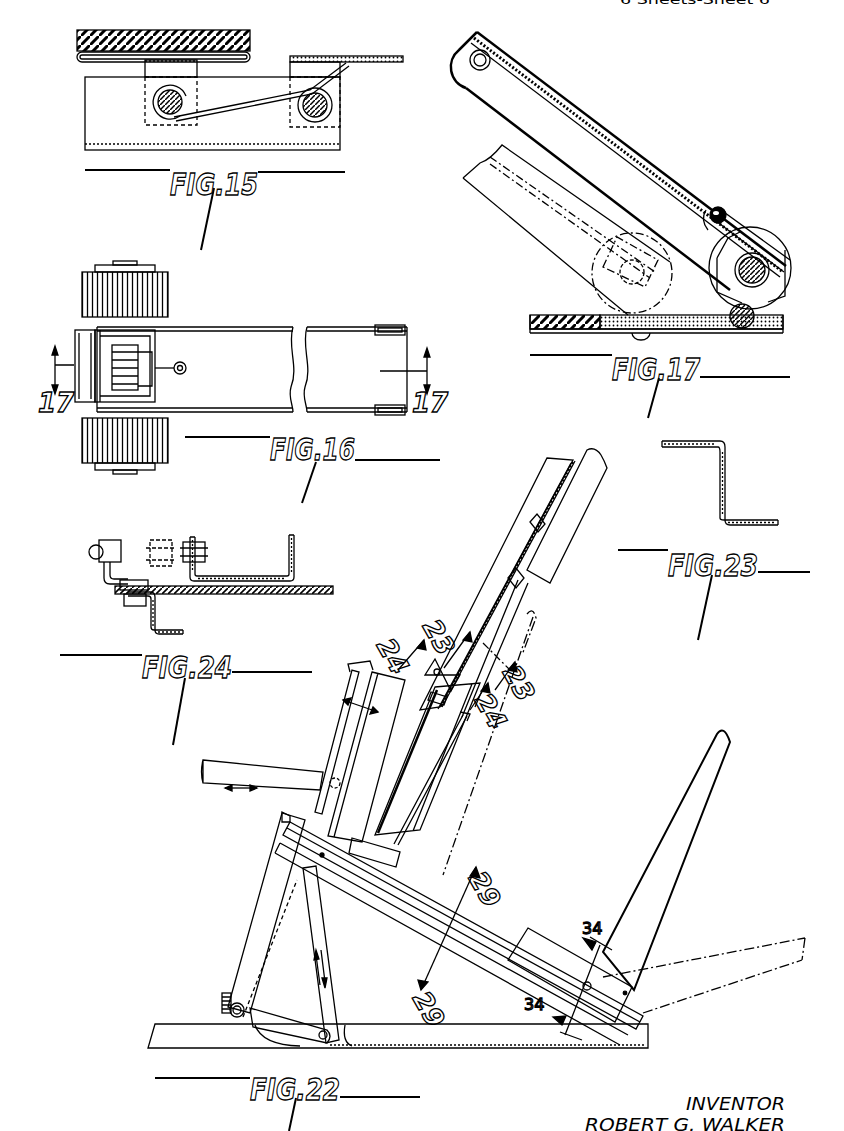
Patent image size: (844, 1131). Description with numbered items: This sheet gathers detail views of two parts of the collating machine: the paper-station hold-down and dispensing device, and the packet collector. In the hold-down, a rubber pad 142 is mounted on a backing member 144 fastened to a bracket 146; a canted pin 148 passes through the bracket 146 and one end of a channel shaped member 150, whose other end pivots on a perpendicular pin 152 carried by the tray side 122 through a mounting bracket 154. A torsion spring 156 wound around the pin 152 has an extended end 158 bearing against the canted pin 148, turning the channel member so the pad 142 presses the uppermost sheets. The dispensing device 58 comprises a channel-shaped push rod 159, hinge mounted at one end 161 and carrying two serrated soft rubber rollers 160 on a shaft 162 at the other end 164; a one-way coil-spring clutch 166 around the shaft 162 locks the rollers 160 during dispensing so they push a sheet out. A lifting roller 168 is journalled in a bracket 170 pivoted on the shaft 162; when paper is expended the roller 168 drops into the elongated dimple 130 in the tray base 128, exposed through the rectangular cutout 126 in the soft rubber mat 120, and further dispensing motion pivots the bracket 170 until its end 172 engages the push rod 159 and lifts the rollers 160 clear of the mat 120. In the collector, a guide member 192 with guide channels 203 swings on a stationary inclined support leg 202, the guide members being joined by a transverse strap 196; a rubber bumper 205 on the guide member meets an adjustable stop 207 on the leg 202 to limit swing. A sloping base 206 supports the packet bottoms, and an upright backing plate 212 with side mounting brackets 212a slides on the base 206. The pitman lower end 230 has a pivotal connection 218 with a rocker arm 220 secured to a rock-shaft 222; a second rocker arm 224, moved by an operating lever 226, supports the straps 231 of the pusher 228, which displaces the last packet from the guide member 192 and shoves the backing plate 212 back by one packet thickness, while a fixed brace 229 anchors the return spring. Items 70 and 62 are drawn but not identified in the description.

In FIG. 15, the rubber pad 142 is at (238, 31).
In FIG. 15, the backing member 144 is at (78, 58).
In FIG. 15, the bracket 146 is at (180, 58).
In FIG. 15, the side 122 is at (358, 56).
In FIG. 15, the channel shaped member 150 is at (341, 150).
In FIG. 15, the canted pin 148 is at (158, 97).
In FIG. 15, the extended end 158 is at (154, 110).
In FIG. 15, the mounting bracket 154 is at (215, 100).
In FIG. 15, the torsion spring 156 is at (330, 102).
In FIG. 15, the perpendicular pin 152 is at (333, 115).
In FIG. 16, the serrated soft rubber rollers 160 is at (170, 295).
In FIG. 17, the serrated soft rubber rollers 160 is at (776, 240).
In FIG. 16, the dispensing device 58 is at (265, 327).
In FIG. 17, the dispensing device 58 is at (568, 98).
In FIG. 16, the channel-shaped push rod 159 is at (327, 327).
In FIG. 17, the channel-shaped push rod 159 is at (596, 118).
In FIG. 16, the hinge-mounted end 161 is at (388, 325).
In FIG. 17, the hinge-mounted end 161 is at (491, 53).
In FIG. 16, the lifting roller 168 is at (76, 340).
In FIG. 17, the lifting roller 168 is at (660, 334).
In FIG. 16, the shaft 162 is at (100, 325).
In FIG. 17, the shaft 162 is at (766, 258).
In FIG. 16, the other end 164 is at (168, 325).
In FIG. 17, the other end 164 is at (718, 206).
In FIG. 16, the bracket 170 is at (160, 352).
In FIG. 17, the bracket 170 is at (775, 292).
In FIG. 16, the one-way coil-spring clutch 166 is at (140, 380).
In FIG. 17, the one-way coil-spring clutch 166 is at (770, 270).
In FIG. 17, the end 172 is at (750, 230).
In FIG. 17, the elongated dimple 130 is at (636, 333).
In FIG. 17, the soft rubber mat 120 is at (566, 315).
In FIG. 17, the rectangular cutout portion 126 is at (700, 334).
In FIG. 17, the base 128 is at (783, 330).
In FIG. 23, the guide channels 203 is at (700, 441).
In FIG. 24, the guide channels 203 is at (160, 622).
In FIG. 22, the guide channels 203 is at (510, 580).
In FIG. 23, the guide member 192 is at (720, 490).
In FIG. 24, the guide member 192 is at (152, 618).
In FIG. 22, the guide member 192 is at (528, 598).
In FIG. 24, the transverse strap 196 is at (322, 585).
In FIG. 24, the support leg 202 is at (238, 578).
In FIG. 22, the support leg 202 is at (536, 490).
In FIG. 24, the rubber bumper 205 is at (122, 548).
In FIG. 22, the rubber bumper 205 is at (434, 668).
In FIG. 24, the adjustable stop 207 is at (185, 542).
In FIG. 22, the base 70 is at (433, 1032).
In FIG. 22, the sloping base 206 is at (397, 912).
In FIG. 22, the second rocker arm 224 is at (246, 930).
In FIG. 22, the lower end 230 is at (333, 1003).
In FIG. 22, the rocker arm 220 is at (282, 1018).
In FIG. 22, the rock-shaft 222 is at (221, 1007).
In FIG. 22, the pivotal connection 218 is at (322, 1046).
In FIG. 22, the operating lever 226 is at (273, 770).
In FIG. 22, the pusher 228 is at (356, 663).
In FIG. 22, the straps 231 is at (437, 788).
In FIG. 22, the fixed brace 229 is at (525, 556).
In FIG. 22, the upright backing plate 212 is at (712, 760).
In FIG. 22, the side mounting brackets 212a is at (556, 940).
In FIG. 22, the tine phantom 62 is at (714, 821).